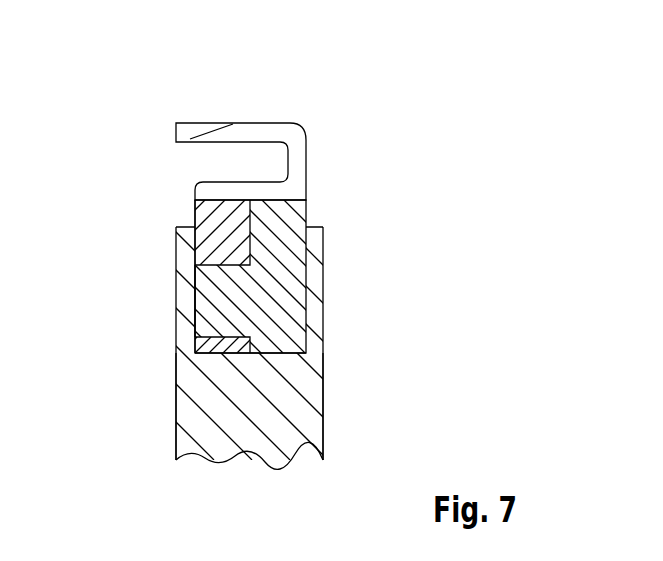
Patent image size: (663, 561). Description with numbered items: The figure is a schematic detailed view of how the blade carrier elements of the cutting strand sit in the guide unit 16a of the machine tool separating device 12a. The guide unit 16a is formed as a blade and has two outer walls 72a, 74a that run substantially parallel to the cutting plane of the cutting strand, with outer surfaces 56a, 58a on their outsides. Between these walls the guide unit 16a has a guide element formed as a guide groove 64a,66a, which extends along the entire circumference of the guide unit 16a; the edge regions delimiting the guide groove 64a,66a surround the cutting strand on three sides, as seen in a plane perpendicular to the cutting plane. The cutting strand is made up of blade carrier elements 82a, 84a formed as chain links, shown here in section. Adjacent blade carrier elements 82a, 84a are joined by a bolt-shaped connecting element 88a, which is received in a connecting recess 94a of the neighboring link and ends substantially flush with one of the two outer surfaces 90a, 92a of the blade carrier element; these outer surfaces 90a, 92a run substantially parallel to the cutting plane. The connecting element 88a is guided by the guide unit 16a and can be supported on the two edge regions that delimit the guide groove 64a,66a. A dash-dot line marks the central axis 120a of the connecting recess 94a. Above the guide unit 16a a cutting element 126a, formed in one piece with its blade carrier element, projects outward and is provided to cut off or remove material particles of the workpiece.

The machine tool separating device 12a is at (408, 94).
The cutting element 126a is at (283, 123).
The outer surface 90a is at (312, 210).
The outer surface 92a is at (189, 210).
The blade carrier element 82a is at (218, 240).
The blade carrier element 84a is at (300, 242).
The connecting element 88a is at (203, 324).
The connecting recess 94a is at (200, 365).
The central axis 120a is at (135, 300).
The guide element formed as guide groove 64a,66a is at (278, 356).
The outer wall 72a is at (176, 412).
The outer surface 56a is at (170, 440).
The outer wall 74a is at (323, 405).
The outer surface 58a is at (329, 430).
The guide unit 16a is at (300, 435).